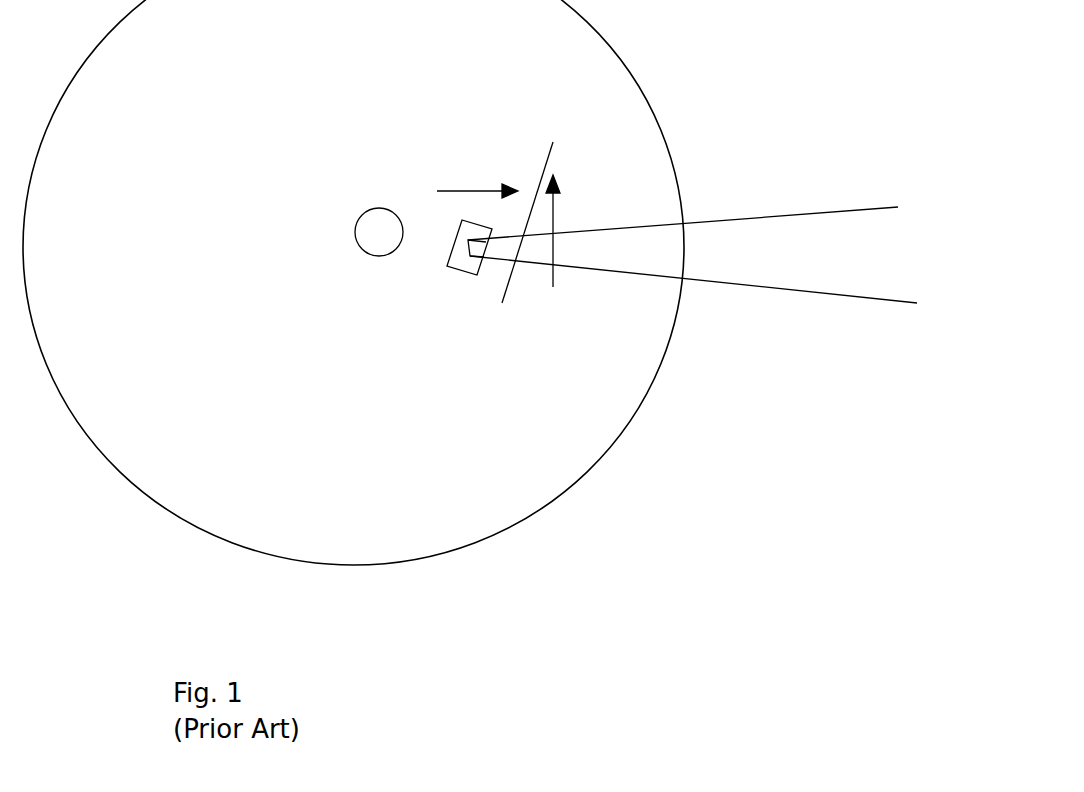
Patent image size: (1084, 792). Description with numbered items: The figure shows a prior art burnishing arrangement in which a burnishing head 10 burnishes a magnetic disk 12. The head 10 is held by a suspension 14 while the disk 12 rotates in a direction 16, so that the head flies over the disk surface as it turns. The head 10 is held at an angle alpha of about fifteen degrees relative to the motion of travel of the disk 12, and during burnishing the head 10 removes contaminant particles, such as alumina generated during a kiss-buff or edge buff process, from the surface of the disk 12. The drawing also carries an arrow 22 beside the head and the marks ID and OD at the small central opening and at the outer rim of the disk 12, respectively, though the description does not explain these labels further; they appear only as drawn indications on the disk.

The burnishing head 10 is at (420, 277).
The magnetic disk 12 is at (598, 407).
The suspension 14 is at (748, 257).
The direction 16 is at (553, 223).
The radial direction arrow 22 is at (470, 191).
The inner diameter ID is at (339, 199).
The outer diameter OD is at (563, 515).